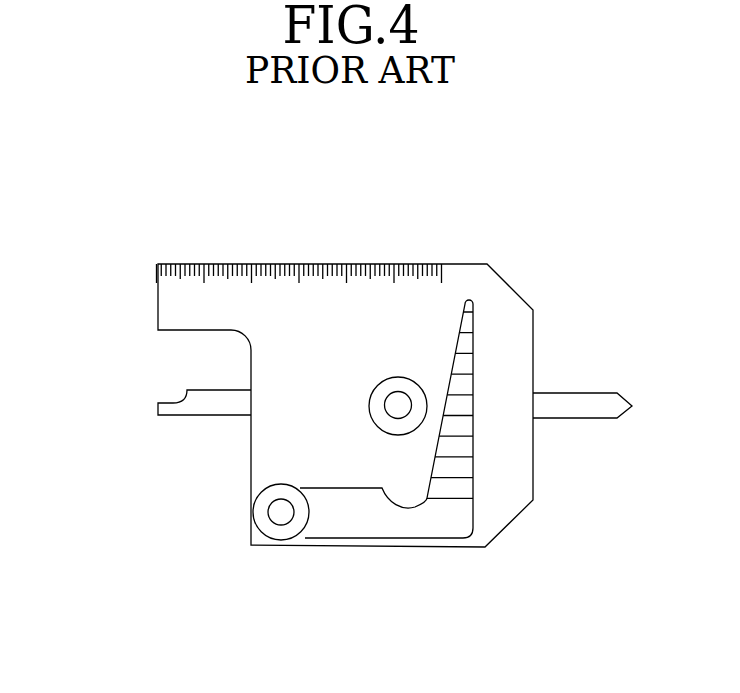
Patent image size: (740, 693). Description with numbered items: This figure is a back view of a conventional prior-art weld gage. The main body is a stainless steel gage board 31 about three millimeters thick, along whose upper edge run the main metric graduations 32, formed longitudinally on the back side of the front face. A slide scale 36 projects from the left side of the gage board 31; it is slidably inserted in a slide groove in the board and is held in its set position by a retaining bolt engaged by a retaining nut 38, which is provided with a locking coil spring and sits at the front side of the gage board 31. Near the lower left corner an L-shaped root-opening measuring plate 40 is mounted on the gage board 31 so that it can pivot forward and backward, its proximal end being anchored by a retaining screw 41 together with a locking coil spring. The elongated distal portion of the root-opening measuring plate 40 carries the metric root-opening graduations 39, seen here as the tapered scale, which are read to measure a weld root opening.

The gage board 31 is at (476, 265).
The main metric graduations 32 is at (221, 263).
The slide scale 36 is at (207, 403).
The retaining nut 38 is at (398, 392).
The metric root-opening graduations 39 is at (465, 378).
The root-opening measuring plate 40 is at (385, 523).
The retaining screw 41 is at (282, 512).